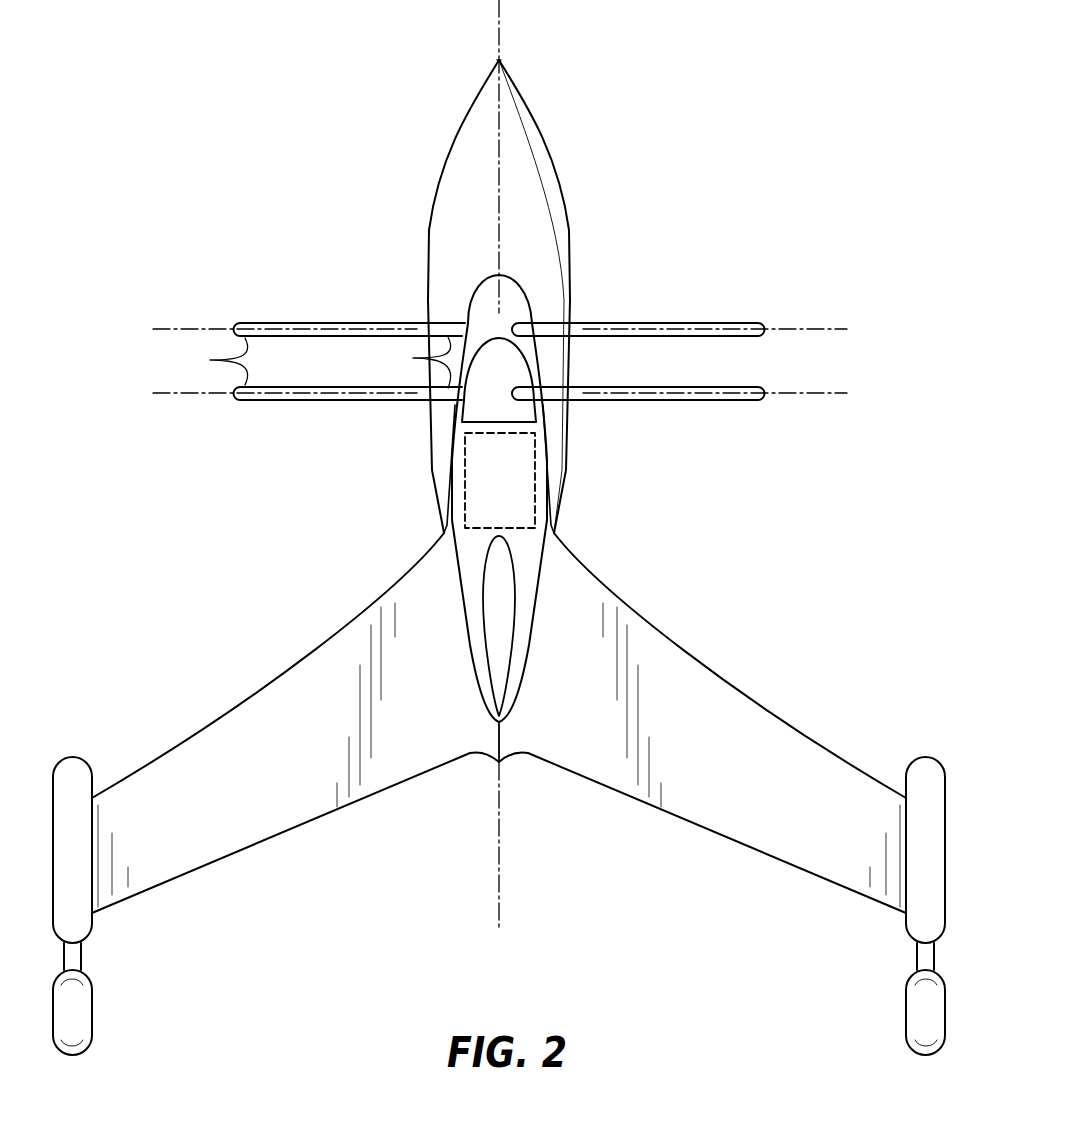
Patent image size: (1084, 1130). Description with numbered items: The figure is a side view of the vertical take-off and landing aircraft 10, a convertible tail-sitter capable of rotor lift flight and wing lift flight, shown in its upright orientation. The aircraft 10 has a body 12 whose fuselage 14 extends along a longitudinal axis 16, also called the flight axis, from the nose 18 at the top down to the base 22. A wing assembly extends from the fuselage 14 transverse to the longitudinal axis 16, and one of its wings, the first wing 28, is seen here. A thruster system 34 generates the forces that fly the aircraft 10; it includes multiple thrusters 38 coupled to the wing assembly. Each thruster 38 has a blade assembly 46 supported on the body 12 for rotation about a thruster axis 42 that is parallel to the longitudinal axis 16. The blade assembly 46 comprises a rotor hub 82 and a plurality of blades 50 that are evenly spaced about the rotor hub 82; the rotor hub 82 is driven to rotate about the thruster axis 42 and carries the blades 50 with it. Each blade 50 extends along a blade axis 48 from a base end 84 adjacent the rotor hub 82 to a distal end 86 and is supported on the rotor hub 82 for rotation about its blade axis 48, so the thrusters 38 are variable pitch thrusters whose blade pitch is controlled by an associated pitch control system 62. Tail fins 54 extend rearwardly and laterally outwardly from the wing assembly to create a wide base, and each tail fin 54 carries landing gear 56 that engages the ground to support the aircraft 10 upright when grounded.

The aircraft 10 is at (665, 122).
The body 12 is at (551, 535).
The fuselage 14 is at (448, 168).
The longitudinal axis 16 is at (503, 155).
The thruster axis 42 is at (531, 296).
The nose 18 is at (500, 62).
The base 22 is at (508, 753).
The first wing 28 is at (500, 622).
The thruster system 34 is at (297, 270).
The thruster 38 is at (460, 290).
The blade assembly 46 is at (578, 303).
The blade axis 48 is at (800, 325).
The blade 50 is at (252, 324).
The tail fin 54 is at (172, 773).
The landing gear 56 is at (80, 1013).
The pitch control system 62 is at (460, 463).
The rotor hub 82 is at (512, 287).
The base end 84 is at (416, 362).
The distal end 86 is at (213, 361).